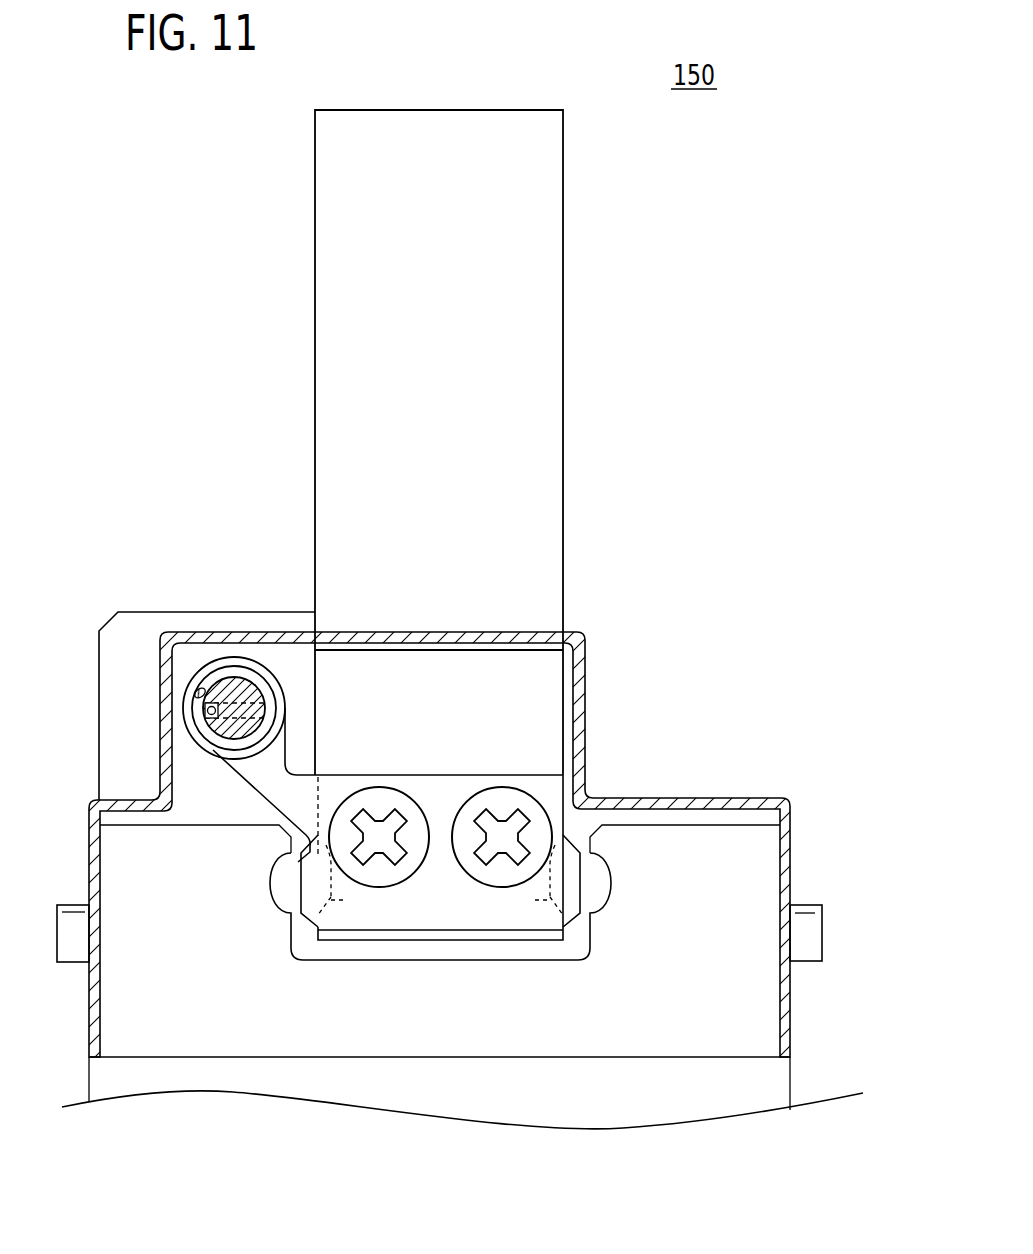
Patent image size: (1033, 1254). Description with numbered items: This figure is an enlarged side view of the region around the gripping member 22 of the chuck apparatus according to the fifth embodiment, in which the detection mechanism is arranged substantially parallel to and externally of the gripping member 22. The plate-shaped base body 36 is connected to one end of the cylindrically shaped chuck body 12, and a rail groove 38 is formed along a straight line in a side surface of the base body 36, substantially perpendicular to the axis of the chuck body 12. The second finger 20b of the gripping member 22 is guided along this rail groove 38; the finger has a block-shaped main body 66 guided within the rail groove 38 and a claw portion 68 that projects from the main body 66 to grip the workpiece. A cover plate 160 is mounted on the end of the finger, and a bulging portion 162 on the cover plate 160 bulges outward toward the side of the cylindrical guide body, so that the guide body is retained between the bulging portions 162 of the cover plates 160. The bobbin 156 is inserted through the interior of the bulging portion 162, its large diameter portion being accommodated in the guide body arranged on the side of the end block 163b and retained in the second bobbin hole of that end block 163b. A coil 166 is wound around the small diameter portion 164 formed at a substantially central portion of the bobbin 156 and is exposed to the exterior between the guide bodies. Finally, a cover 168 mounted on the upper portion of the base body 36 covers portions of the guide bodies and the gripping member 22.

The chuck body 12 is at (795, 1061).
The gripping member 22 is at (533, 90).
The second finger 20b is at (308, 194).
The base body 36 is at (137, 1010).
The rail groove 38 is at (358, 952).
The main bodies 66 is at (540, 698).
The claw portions 68 is at (548, 300).
The bobbin 156 is at (241, 670).
The cover plates 160 is at (437, 915).
The bulging portions 162 is at (285, 733).
The end block 163b is at (140, 622).
The small diameter portion 164 is at (217, 747).
The coil 166 is at (214, 707).
The cover 168 is at (468, 632).